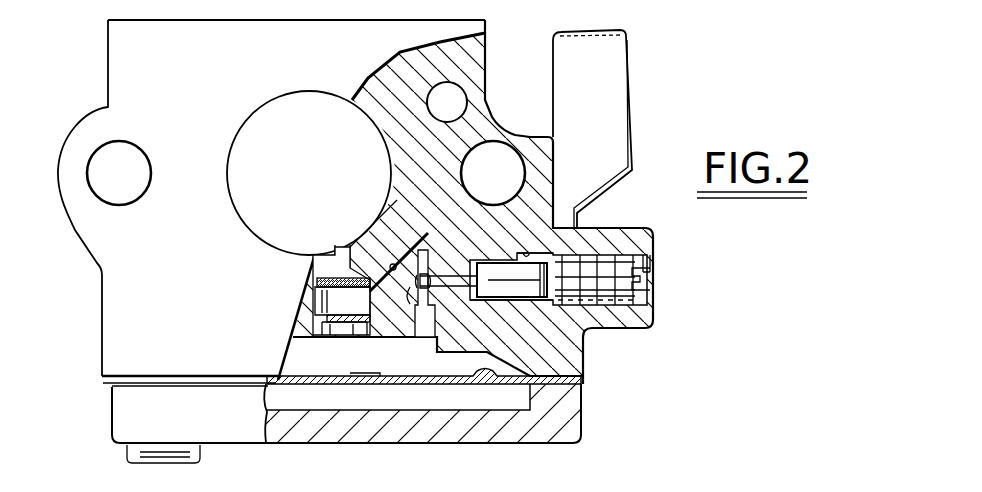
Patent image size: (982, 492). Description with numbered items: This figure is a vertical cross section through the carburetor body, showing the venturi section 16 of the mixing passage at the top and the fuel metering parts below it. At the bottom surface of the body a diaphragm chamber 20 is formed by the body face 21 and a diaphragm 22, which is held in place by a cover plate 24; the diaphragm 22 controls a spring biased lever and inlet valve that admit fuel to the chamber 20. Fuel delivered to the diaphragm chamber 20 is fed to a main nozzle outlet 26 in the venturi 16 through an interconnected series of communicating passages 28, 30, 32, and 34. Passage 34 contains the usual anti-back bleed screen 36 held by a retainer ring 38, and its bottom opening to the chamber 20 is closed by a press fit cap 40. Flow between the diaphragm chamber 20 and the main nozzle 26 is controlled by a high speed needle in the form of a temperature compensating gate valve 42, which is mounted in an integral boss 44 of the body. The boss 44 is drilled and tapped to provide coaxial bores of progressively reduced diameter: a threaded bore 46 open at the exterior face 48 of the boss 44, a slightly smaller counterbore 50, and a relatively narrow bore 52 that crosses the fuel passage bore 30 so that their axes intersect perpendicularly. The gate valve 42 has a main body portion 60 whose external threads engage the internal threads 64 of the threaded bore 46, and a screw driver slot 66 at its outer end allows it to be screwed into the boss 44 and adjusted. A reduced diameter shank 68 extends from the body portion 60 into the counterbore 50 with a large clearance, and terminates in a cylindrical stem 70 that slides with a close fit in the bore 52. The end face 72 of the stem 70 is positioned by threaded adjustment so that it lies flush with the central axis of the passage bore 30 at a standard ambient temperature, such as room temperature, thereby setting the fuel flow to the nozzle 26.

The venturi section 16 is at (352, 110).
The diaphragm chamber 20 is at (323, 367).
The body face 21 is at (457, 352).
The diaphragm 22 is at (467, 387).
The cover plate 24 is at (393, 447).
The main nozzle outlet 26 is at (333, 253).
The passage 28 is at (425, 338).
The passage 30 is at (388, 212).
The passage 32 is at (377, 248).
The passage 34 is at (297, 298).
The anti-back bleed screen 36 is at (303, 318).
The retainer ring 38 is at (303, 280).
The press fit cap 40 is at (357, 338).
The temperature compensating gate valve 42 is at (648, 287).
The boss 44 is at (620, 330).
The threaded bore 46 is at (540, 255).
The exterior face 48 is at (653, 320).
The counterbore 50 is at (493, 297).
The bore 52 is at (395, 266).
The main body portion 60 is at (615, 250).
The internal threads 64 is at (545, 293).
The screw driver slot 66 is at (647, 267).
The reduced diameter shank 68 is at (522, 293).
The cylindrical stem 70 is at (453, 274).
The end face 72 is at (413, 292).